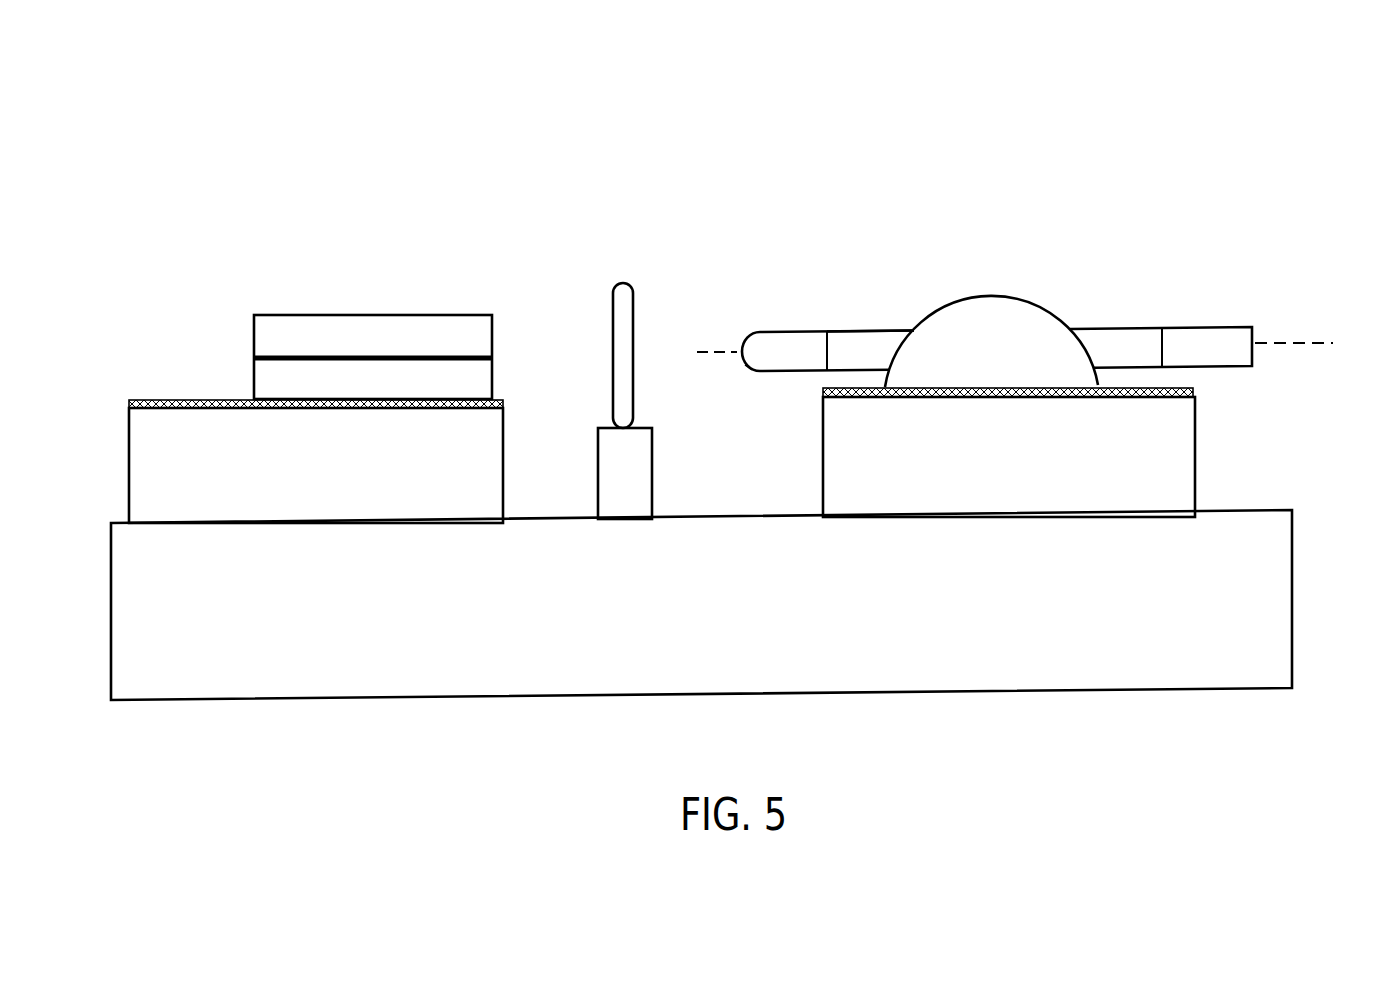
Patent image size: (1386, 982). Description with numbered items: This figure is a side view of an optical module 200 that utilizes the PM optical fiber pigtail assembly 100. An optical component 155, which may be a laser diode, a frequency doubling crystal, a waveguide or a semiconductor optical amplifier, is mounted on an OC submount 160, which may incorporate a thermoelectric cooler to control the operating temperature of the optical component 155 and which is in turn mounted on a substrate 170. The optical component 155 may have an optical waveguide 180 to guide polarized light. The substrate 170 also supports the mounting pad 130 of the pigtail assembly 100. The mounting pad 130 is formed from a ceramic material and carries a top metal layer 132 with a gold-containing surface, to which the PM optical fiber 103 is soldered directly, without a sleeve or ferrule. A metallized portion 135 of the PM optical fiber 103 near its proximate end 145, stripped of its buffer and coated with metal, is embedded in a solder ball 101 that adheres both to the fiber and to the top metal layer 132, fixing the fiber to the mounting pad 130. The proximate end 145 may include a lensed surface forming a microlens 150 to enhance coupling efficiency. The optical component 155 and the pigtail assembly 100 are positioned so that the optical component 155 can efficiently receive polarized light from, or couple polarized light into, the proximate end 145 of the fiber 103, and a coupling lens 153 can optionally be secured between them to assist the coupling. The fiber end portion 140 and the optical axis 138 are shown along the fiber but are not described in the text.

The optical module 200 is at (665, 102).
The PM optical fiber pigtail assembly 100 is at (1140, 208).
The solder ball 101 is at (1038, 302).
The PM optical fiber 103 is at (807, 330).
The metallized portion of the PMF 135 is at (875, 329).
The fiber end portion 140 is at (1190, 327).
The optical axis 138 is at (1333, 343).
The proximate fiber end 145 is at (730, 322).
The microlens 150 is at (745, 364).
The top metal layer 132 is at (823, 392).
The mounting pad 130 is at (1207, 450).
The OC submount 160 is at (148, 398).
The optical component 155 is at (353, 333).
The optical waveguide 180 is at (492, 353).
The coupling lens 153 is at (622, 283).
The substrate 170 is at (1293, 560).